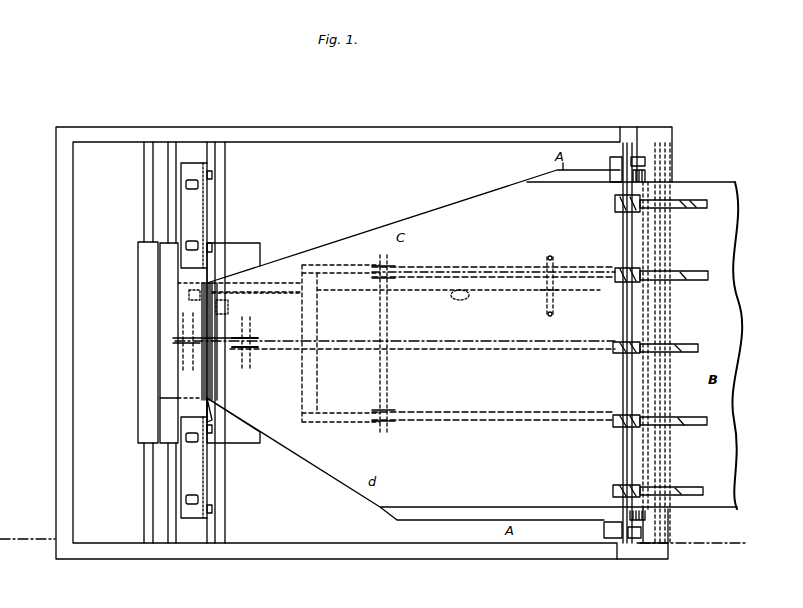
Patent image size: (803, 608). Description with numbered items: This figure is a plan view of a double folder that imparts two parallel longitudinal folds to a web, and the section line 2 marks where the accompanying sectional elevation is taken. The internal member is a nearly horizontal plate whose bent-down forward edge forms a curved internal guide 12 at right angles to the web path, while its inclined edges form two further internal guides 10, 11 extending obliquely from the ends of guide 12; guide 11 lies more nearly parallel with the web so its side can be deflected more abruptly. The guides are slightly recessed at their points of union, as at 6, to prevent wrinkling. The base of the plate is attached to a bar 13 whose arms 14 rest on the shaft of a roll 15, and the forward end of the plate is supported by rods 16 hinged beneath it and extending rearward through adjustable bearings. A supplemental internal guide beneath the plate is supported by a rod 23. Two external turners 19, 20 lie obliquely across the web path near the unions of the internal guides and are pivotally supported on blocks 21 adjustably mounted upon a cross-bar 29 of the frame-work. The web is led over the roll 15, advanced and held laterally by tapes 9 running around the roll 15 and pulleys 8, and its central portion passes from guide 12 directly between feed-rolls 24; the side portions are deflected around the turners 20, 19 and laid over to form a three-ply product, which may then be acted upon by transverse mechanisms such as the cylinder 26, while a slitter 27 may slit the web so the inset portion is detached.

The section line 2 is at (372, 537).
The recess 6 is at (245, 348).
The pulleys 8 is at (180, 336).
The tapes 9 is at (280, 341).
The internal guide 10 is at (340, 480).
The internal guide 11 is at (370, 210).
The internal guide 12 is at (209, 341).
The bar 13 is at (610, 164).
The arms 14 is at (640, 157).
The roll 15 is at (658, 517).
The rods 16 is at (472, 264).
The external turner 19 is at (216, 418).
The external turner 20 is at (211, 280).
The blocks 21 is at (196, 340).
The rod 23 is at (422, 292).
The feed-rolls 24 is at (143, 393).
The cylinder 26 is at (242, 445).
The slitter 27 is at (556, 292).
The cross-bar 29 is at (240, 341).